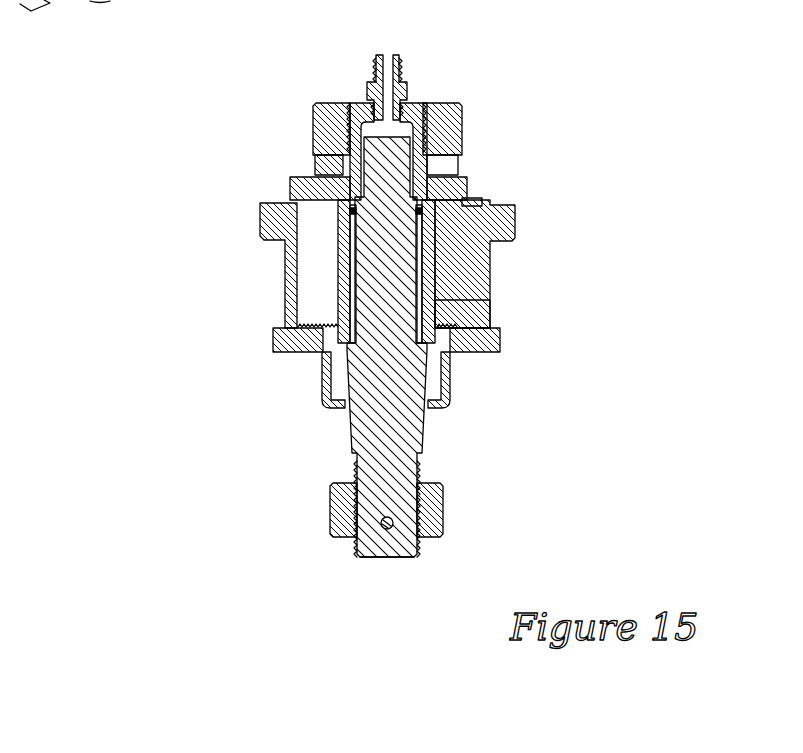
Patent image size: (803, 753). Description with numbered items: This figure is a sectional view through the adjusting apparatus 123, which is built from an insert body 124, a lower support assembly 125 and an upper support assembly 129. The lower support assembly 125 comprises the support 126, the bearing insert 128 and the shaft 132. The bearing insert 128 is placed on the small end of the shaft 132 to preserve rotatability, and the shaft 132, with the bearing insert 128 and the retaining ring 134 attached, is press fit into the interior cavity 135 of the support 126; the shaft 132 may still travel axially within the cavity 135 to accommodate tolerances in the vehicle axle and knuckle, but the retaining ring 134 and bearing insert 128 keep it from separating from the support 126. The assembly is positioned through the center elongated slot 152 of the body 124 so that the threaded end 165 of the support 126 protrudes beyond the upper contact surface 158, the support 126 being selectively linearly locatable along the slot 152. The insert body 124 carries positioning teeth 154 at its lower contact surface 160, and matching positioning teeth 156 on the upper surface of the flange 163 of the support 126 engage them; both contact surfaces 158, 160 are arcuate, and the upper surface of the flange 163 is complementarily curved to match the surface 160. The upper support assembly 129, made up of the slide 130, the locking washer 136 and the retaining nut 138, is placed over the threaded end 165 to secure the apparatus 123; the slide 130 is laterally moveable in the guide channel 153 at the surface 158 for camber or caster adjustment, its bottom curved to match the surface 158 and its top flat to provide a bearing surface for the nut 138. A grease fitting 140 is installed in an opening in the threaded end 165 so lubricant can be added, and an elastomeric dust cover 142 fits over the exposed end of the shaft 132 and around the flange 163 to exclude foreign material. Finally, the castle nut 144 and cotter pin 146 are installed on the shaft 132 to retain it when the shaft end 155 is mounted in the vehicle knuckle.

The adjusting apparatus 123 is at (167, 155).
The insert body 124 is at (517, 229).
The lower support assembly 125 is at (313, 443).
The support 126 is at (432, 272).
The bearing insert 128 is at (430, 252).
The upper support assembly 129 is at (488, 105).
The slide 130 is at (467, 187).
The shaft 132 is at (423, 435).
The retaining ring 134 is at (350, 212).
The interior cavity 135 is at (402, 128).
The locking washer 136 is at (320, 172).
The retaining nut 138 is at (460, 133).
The grease fitting 140 is at (393, 55).
The dust cover 142 is at (503, 347).
The castle nut 144 is at (443, 508).
The cotter pin 146 is at (392, 527).
The center elongated slot 152 is at (310, 265).
The guide channel 153 is at (472, 197).
The positioning teeth 154 is at (320, 325).
The shaft end 155 is at (420, 547).
The matching positioning teeth 156 is at (320, 343).
The upper contact surface 158 is at (277, 202).
The lower contact surface 160 is at (448, 322).
The flange 163 is at (453, 363).
The threaded end 165 is at (347, 110).